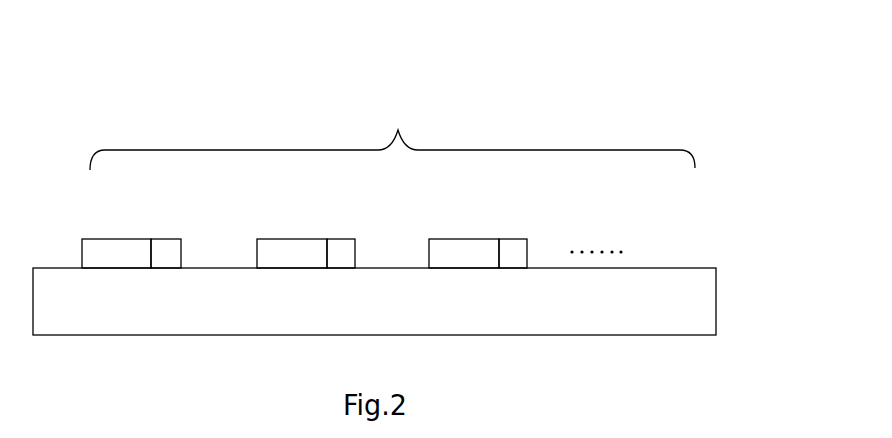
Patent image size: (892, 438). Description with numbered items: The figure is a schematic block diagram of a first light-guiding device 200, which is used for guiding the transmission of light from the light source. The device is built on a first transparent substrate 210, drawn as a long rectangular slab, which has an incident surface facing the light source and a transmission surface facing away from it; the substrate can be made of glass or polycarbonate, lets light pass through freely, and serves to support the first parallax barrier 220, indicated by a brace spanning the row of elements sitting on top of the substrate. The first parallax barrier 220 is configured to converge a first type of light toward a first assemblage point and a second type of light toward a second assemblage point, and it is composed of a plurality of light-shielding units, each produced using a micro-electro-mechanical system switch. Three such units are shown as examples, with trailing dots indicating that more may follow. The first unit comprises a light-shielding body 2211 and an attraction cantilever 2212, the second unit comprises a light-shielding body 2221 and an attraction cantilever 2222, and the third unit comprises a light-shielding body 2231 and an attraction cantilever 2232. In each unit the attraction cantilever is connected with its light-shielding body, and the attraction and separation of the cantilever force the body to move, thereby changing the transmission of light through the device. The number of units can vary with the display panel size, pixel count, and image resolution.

The first light-guiding device 200 is at (113, 53).
The first transparent substrate 210 is at (718, 298).
The first parallax barrier 220 is at (330, 148).
The light-shielding body 2211 is at (117, 238).
The attraction cantilever 2212 is at (166, 238).
The light-shielding body 2221 is at (293, 238).
The attraction cantilever 2222 is at (342, 238).
The light-shielding body 2231 is at (465, 238).
The attraction cantilever 2232 is at (514, 238).